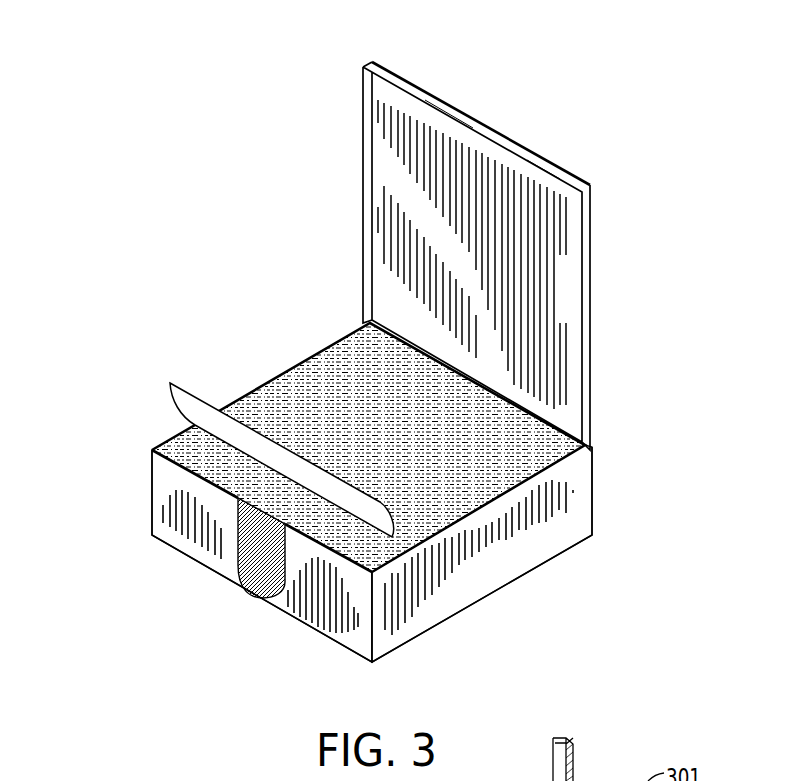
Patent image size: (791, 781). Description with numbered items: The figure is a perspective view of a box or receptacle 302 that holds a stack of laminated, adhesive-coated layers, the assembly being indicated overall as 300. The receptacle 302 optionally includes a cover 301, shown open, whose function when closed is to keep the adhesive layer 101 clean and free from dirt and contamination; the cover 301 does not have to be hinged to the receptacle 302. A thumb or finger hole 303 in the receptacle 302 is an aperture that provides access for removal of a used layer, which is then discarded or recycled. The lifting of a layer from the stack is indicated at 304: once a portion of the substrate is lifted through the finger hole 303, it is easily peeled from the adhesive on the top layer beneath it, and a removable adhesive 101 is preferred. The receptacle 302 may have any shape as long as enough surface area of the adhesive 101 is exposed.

The packaging box 300 is at (622, 197).
The cover 301 is at (478, 128).
The receptacle 302 is at (403, 492).
The finger or thumb hole 303 is at (262, 600).
The lifting of a layer 304 is at (283, 457).
The adhesive layer 101 is at (368, 447).